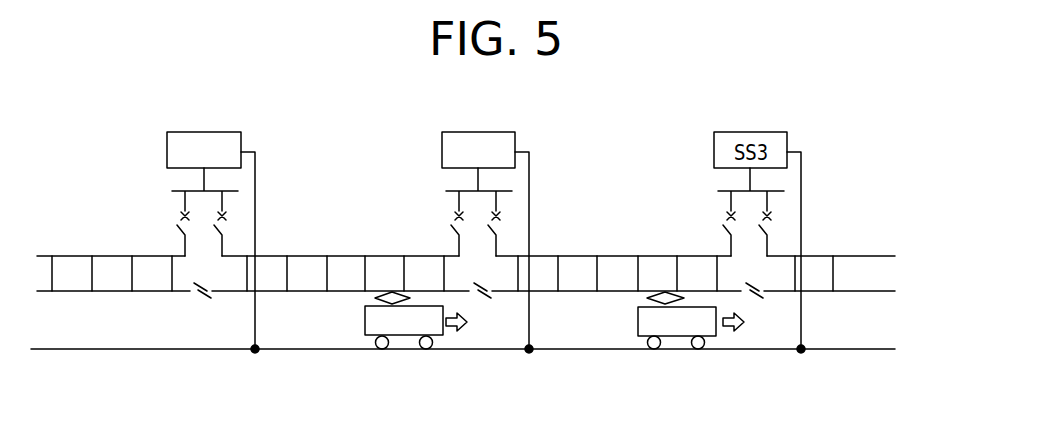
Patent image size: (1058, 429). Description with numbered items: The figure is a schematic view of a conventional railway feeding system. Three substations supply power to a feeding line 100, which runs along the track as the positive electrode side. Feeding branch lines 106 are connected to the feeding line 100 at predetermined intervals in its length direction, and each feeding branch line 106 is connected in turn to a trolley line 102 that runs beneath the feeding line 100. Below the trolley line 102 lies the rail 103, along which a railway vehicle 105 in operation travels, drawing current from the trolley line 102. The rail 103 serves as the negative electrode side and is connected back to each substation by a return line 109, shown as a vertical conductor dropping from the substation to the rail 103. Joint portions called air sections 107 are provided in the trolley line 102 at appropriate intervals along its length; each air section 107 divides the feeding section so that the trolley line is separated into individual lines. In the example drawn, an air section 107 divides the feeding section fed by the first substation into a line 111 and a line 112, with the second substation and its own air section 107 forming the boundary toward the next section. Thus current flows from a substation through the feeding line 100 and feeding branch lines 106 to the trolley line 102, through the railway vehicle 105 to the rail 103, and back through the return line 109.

The feeding line 100 is at (651, 256).
The trolley line 102 is at (855, 291).
The rail 103 is at (848, 349).
The railway vehicle 105 is at (405, 336).
The feeding branch line 106 is at (287, 273).
The air section 107 is at (195, 298).
The return line 109 is at (255, 173).
The line 111 is at (145, 200).
The line 112 is at (425, 218).